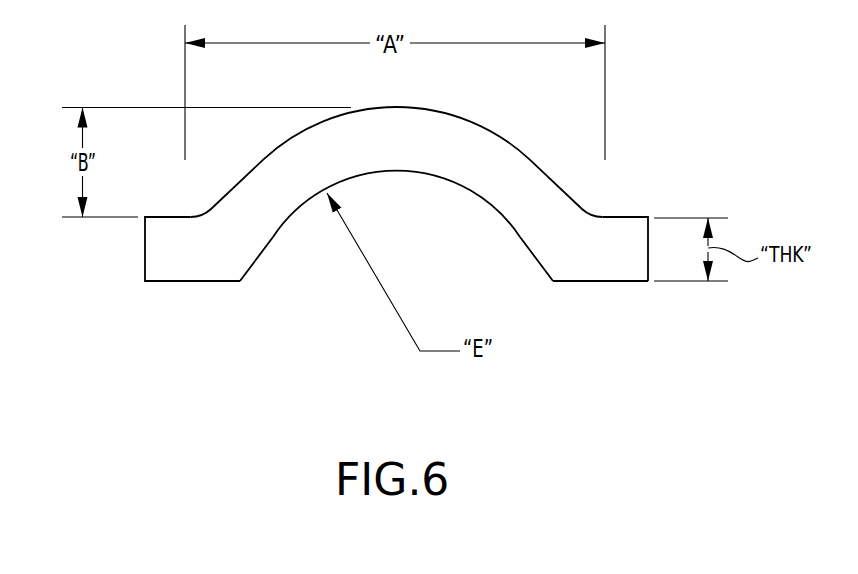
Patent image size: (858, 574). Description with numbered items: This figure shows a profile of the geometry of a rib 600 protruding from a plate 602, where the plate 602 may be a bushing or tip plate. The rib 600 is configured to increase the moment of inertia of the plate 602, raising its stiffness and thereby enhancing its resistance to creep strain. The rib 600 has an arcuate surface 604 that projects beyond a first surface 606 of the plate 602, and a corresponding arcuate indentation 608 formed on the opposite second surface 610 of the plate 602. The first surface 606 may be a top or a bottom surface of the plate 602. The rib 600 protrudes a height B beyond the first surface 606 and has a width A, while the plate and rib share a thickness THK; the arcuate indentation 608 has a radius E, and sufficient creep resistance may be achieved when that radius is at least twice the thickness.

The rib 600 is at (402, 214).
The plate 602 is at (165, 247).
The arcuate surface 604 is at (446, 113).
The first surface 606 is at (630, 216).
The arcuate indentation 608 is at (274, 238).
The second surface 610 is at (628, 281).